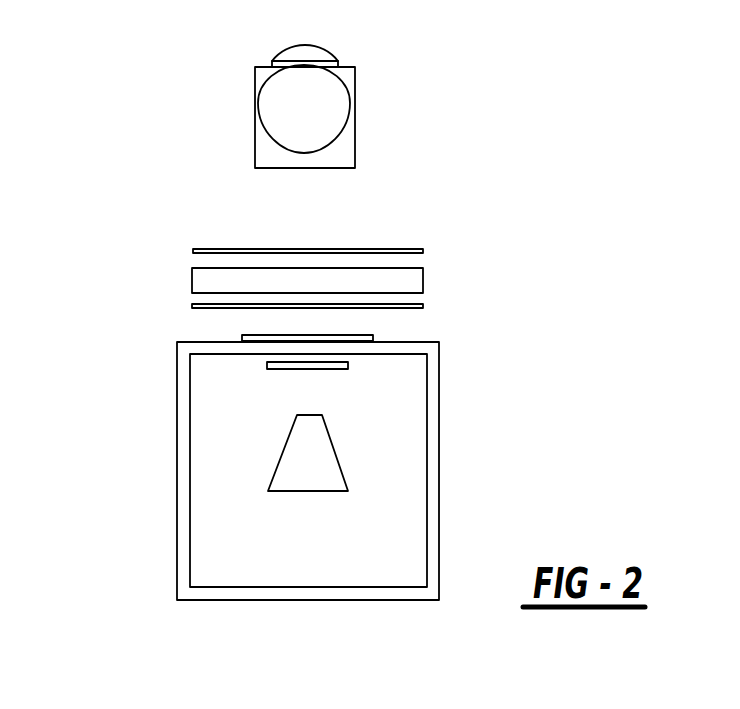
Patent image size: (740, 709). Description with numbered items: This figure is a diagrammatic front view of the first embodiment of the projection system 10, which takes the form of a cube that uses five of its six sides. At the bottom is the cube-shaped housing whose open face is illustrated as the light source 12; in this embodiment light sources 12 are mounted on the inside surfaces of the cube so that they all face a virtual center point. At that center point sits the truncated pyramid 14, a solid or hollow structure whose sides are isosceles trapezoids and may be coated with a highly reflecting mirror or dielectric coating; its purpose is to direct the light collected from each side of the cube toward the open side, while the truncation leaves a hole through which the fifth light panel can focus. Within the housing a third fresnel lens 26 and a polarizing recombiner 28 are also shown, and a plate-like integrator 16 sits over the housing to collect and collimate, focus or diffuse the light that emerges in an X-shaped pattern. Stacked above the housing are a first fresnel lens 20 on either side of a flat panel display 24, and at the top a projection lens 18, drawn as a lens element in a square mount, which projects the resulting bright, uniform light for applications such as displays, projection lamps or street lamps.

The projection system 10 is at (148, 488).
The light source 12 is at (272, 600).
The truncated pyramid 14 is at (347, 478).
The integrator 16 is at (374, 337).
The projection lens 18 is at (255, 114).
The first fresnel lens 20 is at (195, 250).
The flat panel display 24 is at (423, 281).
The third fresnel lens 26 is at (427, 372).
The polarizing recombiner 28 is at (348, 366).